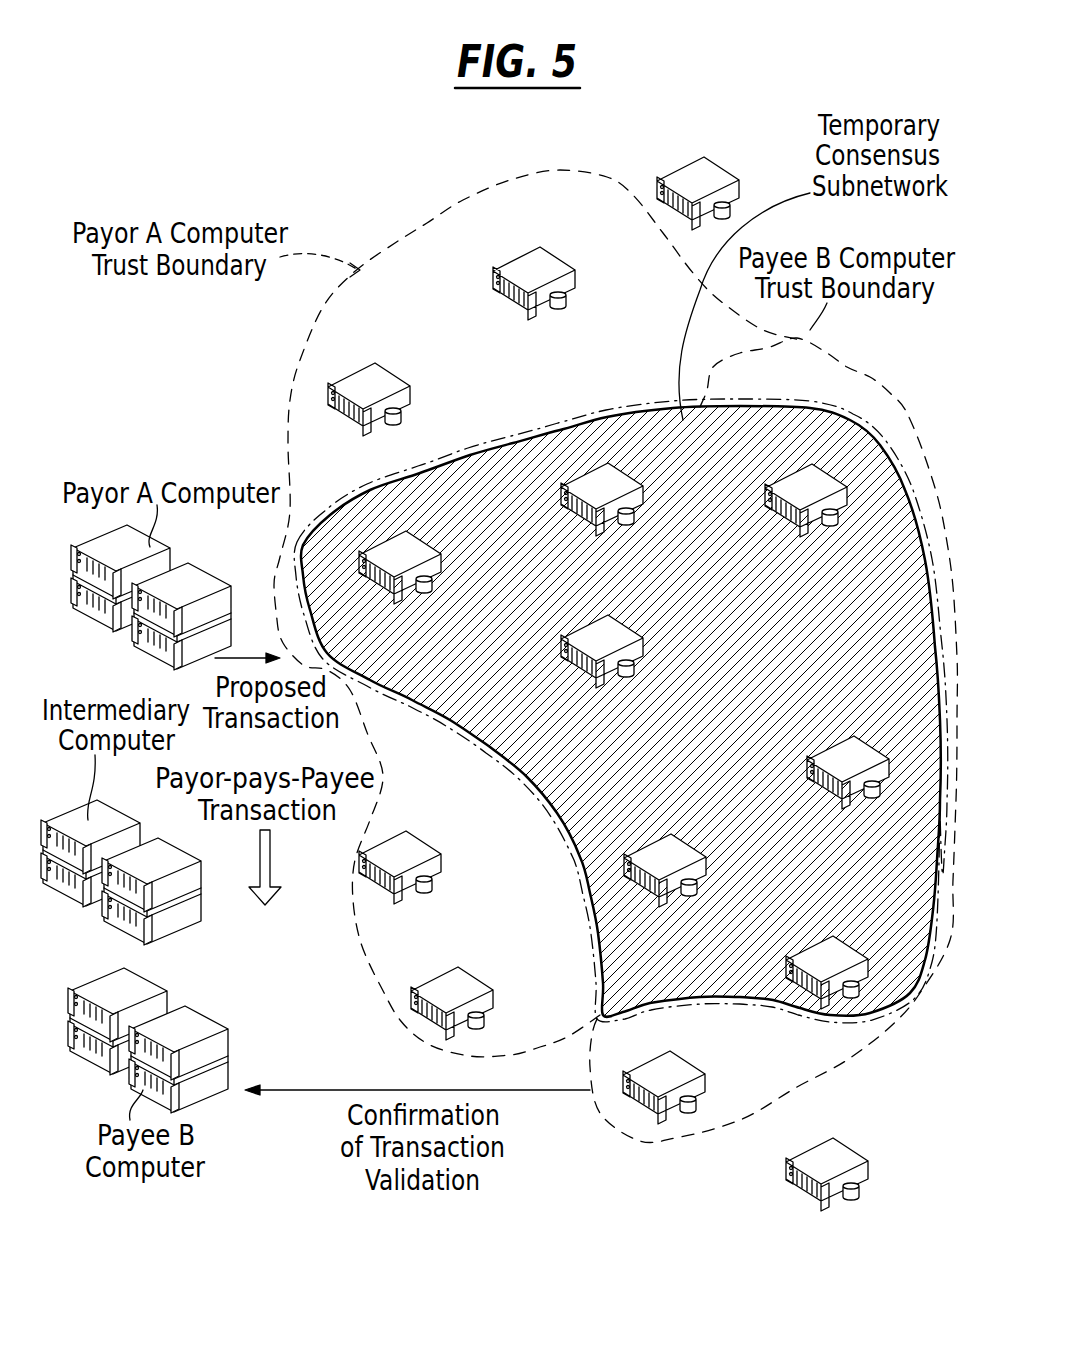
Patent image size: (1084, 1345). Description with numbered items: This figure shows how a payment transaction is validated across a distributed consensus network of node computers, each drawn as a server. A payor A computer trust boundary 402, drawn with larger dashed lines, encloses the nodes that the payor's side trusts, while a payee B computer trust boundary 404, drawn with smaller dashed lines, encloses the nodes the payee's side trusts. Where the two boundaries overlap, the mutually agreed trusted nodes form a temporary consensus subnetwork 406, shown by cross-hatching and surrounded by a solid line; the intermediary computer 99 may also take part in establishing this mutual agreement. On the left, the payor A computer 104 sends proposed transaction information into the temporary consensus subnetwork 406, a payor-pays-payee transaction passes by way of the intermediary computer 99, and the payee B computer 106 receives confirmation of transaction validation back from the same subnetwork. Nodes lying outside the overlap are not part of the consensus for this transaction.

The payor A computer trust boundary 402 is at (455, 207).
The payee B computer trust boundary 404 is at (607, 402).
The temporary consensus subnetwork 406 is at (743, 405).
The payor A computer 104 is at (215, 571).
The intermediary computer 99 is at (210, 917).
The payee B computer 106 is at (243, 1038).